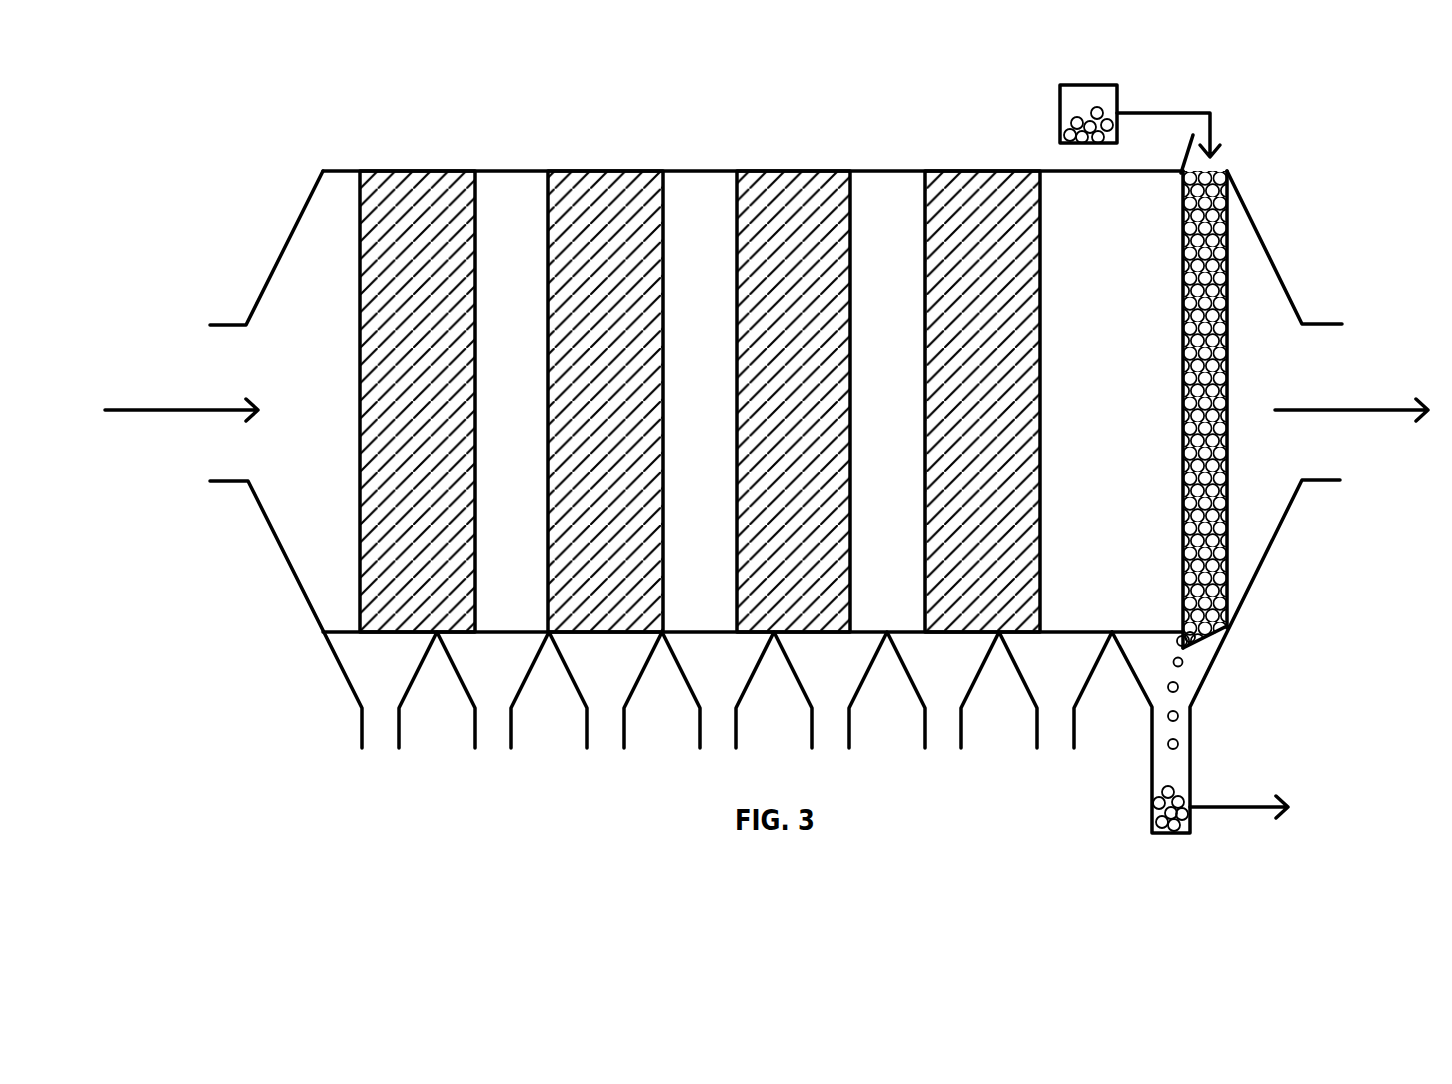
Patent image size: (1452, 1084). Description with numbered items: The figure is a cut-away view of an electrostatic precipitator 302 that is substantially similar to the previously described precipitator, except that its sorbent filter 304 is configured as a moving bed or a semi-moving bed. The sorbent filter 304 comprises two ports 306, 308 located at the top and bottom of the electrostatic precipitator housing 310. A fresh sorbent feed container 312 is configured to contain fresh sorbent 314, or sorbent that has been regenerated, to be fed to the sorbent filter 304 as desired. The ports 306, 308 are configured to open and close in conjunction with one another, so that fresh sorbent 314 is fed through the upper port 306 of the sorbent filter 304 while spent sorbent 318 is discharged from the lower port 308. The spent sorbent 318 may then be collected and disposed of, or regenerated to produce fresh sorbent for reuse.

The electrostatic precipitator 302 is at (454, 846).
The sorbent filter 304 is at (1183, 335).
The port 306 is at (1193, 182).
The port 308 is at (1205, 640).
The electrostatic precipitator housing 310 is at (937, 171).
The fresh sorbent feed container 312 is at (1093, 85).
The fresh sorbent 314 is at (1060, 124).
The spent sorbent 318 is at (1180, 667).